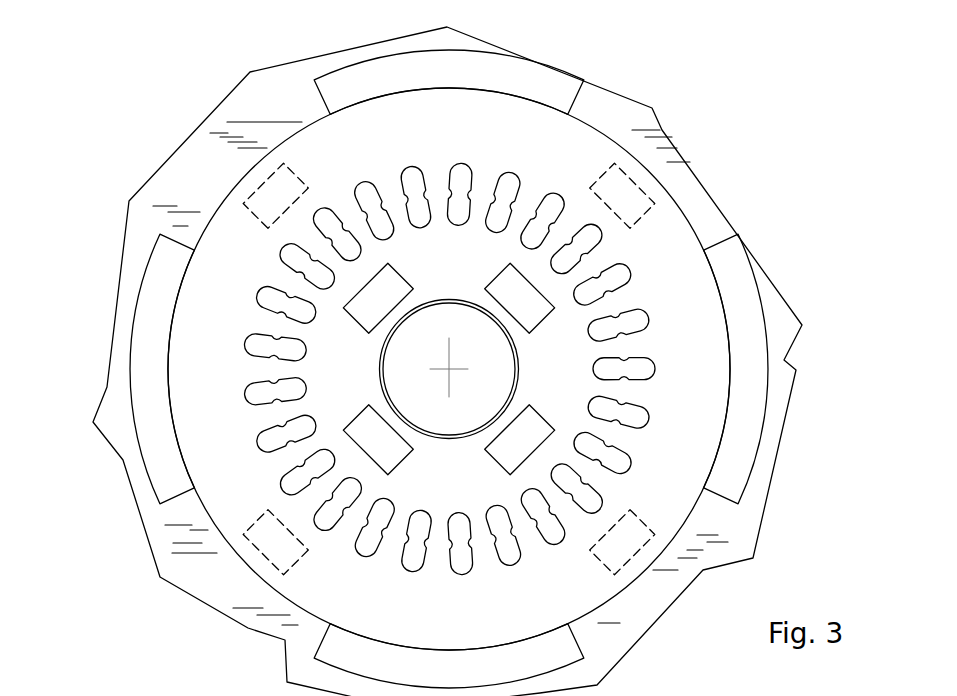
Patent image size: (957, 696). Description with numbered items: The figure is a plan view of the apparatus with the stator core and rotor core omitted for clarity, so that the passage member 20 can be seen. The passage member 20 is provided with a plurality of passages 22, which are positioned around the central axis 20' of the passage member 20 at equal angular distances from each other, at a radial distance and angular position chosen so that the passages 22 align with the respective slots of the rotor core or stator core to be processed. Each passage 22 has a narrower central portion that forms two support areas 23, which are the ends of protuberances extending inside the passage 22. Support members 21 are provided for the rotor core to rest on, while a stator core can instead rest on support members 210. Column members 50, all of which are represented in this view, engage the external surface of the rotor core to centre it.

The passage member 20 is at (447, 361).
The central axis 20' is at (449, 369).
The support members 21 is at (510, 285).
The passages 22 is at (466, 163).
The support areas 23 is at (271, 382).
The support members 210 is at (288, 185).
The column members 50 is at (375, 75).